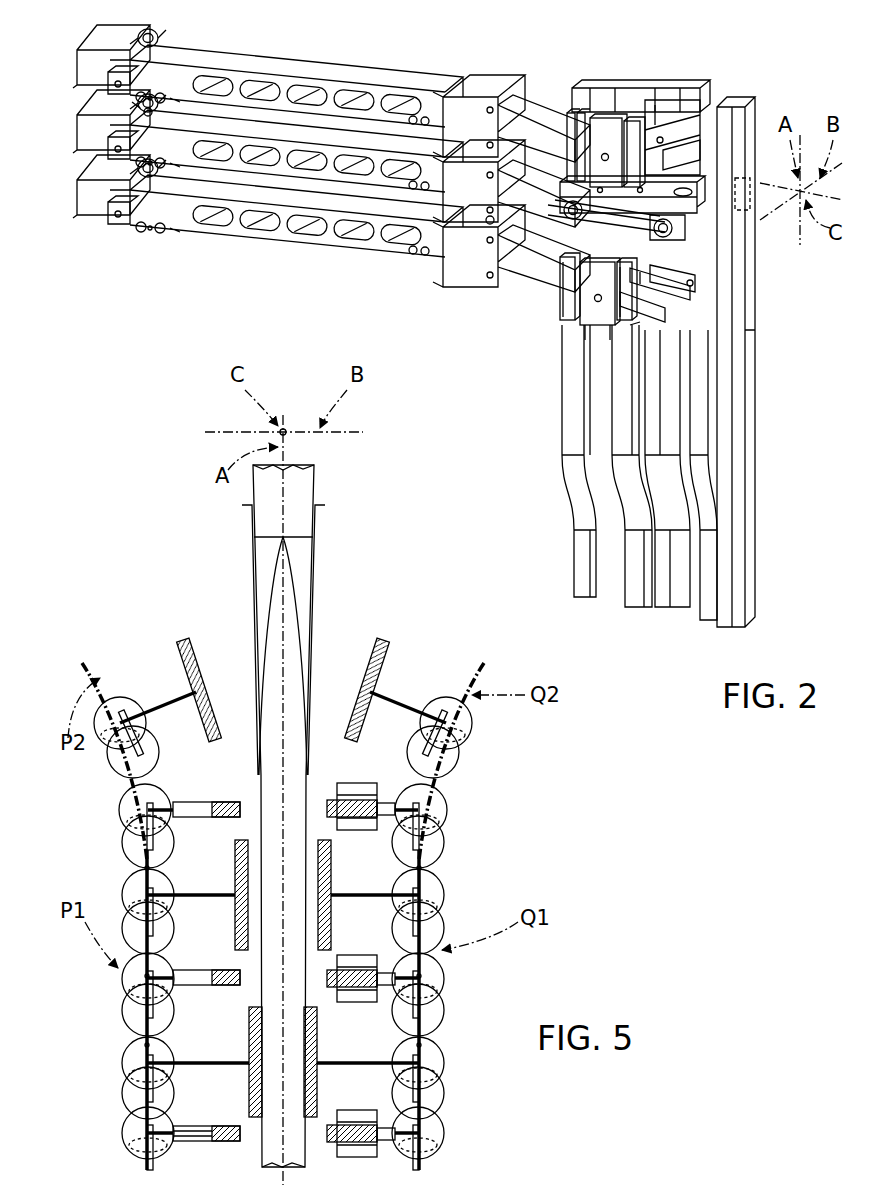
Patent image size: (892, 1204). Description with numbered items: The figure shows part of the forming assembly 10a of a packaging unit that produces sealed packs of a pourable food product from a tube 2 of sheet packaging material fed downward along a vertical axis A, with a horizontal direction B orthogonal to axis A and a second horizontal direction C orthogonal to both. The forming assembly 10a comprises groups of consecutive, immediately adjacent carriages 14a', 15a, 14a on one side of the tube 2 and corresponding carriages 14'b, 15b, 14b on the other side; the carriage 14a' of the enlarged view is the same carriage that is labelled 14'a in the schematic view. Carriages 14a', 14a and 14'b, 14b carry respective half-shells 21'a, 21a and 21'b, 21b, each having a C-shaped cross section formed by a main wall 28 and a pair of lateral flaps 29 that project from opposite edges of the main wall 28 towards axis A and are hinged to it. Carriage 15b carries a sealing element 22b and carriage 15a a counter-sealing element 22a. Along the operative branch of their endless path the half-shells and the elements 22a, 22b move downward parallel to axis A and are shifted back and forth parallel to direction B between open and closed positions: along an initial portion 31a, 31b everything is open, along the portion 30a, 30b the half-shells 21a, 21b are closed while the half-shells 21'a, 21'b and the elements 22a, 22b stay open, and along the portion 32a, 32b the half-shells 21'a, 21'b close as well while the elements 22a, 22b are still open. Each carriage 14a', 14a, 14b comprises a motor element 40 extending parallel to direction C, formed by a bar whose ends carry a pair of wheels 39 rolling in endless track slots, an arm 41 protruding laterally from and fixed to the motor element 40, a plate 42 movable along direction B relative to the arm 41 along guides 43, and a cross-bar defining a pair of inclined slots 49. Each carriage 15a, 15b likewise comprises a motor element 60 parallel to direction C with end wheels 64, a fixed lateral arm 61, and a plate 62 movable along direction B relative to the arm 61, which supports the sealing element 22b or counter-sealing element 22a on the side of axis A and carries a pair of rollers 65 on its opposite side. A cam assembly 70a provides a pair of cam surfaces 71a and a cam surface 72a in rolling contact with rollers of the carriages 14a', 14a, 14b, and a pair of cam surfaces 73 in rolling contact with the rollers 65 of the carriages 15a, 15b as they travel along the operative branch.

In FIG. 5, the tube 2 is at (302, 492).
In FIG. 2, the forming assembly 10a is at (690, 82).
In FIG. 2, the carriage 14a is at (479, 295).
In FIG. 5, the carriage 14a is at (117, 908).
In FIG. 5, the carriage 14b is at (470, 755).
In FIG. 2, the carriage 14a' is at (479, 92).
In FIG. 5, the carriage 14'a is at (117, 911).
In FIG. 5, the carriage 14'b is at (472, 911).
In FIG. 2, the carriage 15a is at (478, 174).
In FIG. 5, the carriage 15a is at (120, 832).
In FIG. 5, the carriage 15b is at (448, 832).
In FIG. 2, the half-shell 21a is at (640, 330).
In FIG. 5, the half-shell 21a is at (184, 680).
In FIG. 5, the half-shell 21b is at (390, 672).
In FIG. 5, the half-shell 21'a is at (198, 895).
In FIG. 5, the half-shell 21'b is at (368, 895).
In FIG. 2, the counter-sealing element 22a is at (688, 188).
In FIG. 5, the counter-sealing element 22a is at (226, 801).
In FIG. 5, the sealing element 22b is at (360, 798).
In FIG. 2, the main wall 28 is at (601, 118).
In FIG. 2, the lateral flaps 29 is at (570, 125).
In FIG. 5, the portion of operative branch 30a is at (140, 975).
In FIG. 5, the portion of operative branch 30b is at (430, 975).
In FIG. 5, the initial portion of operative branch 31a is at (140, 868).
In FIG. 5, the initial portion of operative branch 31b is at (424, 869).
In FIG. 5, the portion of operative branch 32a is at (140, 1045).
In FIG. 5, the portion of operative branch 32b is at (426, 1045).
In FIG. 2, the wheels 39 is at (156, 44).
In FIG. 2, the motor element 40 is at (95, 62).
In FIG. 2, the arm 41 is at (517, 130).
In FIG. 2, the plate 42 is at (700, 284).
In FIG. 2, the guides 43 is at (689, 148).
In FIG. 2, the slots 49 is at (675, 120).
In FIG. 2, the motor element 60 is at (85, 132).
In FIG. 2, the arm 61 is at (518, 210).
In FIG. 2, the plate 62 is at (698, 208).
In FIG. 2, the wheels 64 is at (150, 110).
In FIG. 2, the rollers 65 is at (742, 180).
In FIG. 2, the cam assembly 70a is at (754, 562).
In FIG. 2, the cam surfaces 71a is at (631, 90).
In FIG. 2, the cam surface 72a is at (636, 610).
In FIG. 2, the cam surfaces 73 is at (590, 602).